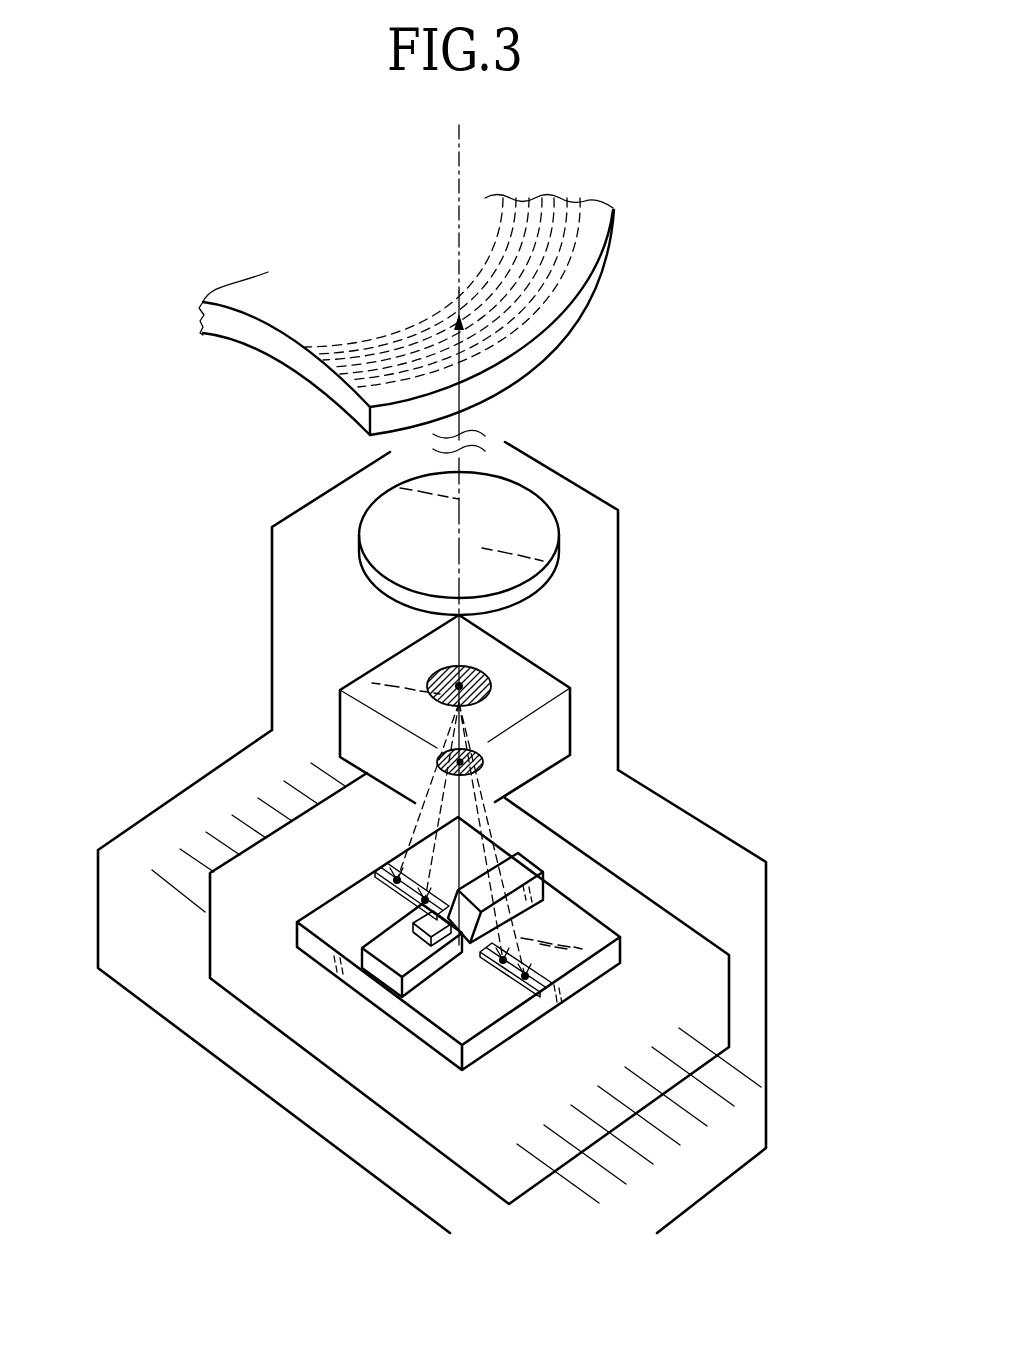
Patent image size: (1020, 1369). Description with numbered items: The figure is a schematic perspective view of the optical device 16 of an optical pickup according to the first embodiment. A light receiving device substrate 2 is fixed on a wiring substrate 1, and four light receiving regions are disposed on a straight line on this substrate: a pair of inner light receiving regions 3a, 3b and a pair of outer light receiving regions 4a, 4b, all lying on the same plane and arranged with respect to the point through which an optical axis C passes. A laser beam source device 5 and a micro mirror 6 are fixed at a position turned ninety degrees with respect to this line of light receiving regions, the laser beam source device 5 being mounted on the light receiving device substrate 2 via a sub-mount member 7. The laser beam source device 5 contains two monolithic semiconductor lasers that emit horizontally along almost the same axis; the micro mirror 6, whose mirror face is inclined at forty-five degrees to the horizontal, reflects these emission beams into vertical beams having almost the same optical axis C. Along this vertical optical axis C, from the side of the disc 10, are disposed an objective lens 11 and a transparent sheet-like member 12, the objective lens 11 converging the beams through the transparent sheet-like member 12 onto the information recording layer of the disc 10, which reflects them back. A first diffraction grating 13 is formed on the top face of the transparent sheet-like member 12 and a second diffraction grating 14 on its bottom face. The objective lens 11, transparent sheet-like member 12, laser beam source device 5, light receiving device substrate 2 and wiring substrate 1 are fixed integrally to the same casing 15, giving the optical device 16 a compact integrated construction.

The wiring substrate 1 is at (729, 1015).
The light receiving device substrate 2 is at (313, 948).
The inner light receiving region 3a is at (519, 1048).
The inner light receiving region 3b is at (239, 849).
The outer light receiving region 4a is at (540, 966).
The outer light receiving region 4b is at (372, 873).
The laser beam source device 5 is at (423, 945).
The micro mirror 6 is at (505, 862).
The sub-mount member 7 is at (393, 962).
The disc 10 is at (606, 271).
The objective lens 11 is at (553, 508).
The transparent sheet-like member 12 is at (353, 720).
The first diffraction grating 13 is at (492, 684).
The second diffraction grating 14 is at (483, 760).
The casing 15 is at (768, 931).
The optical device 16 is at (478, 837).
The optical axis C is at (451, 181).